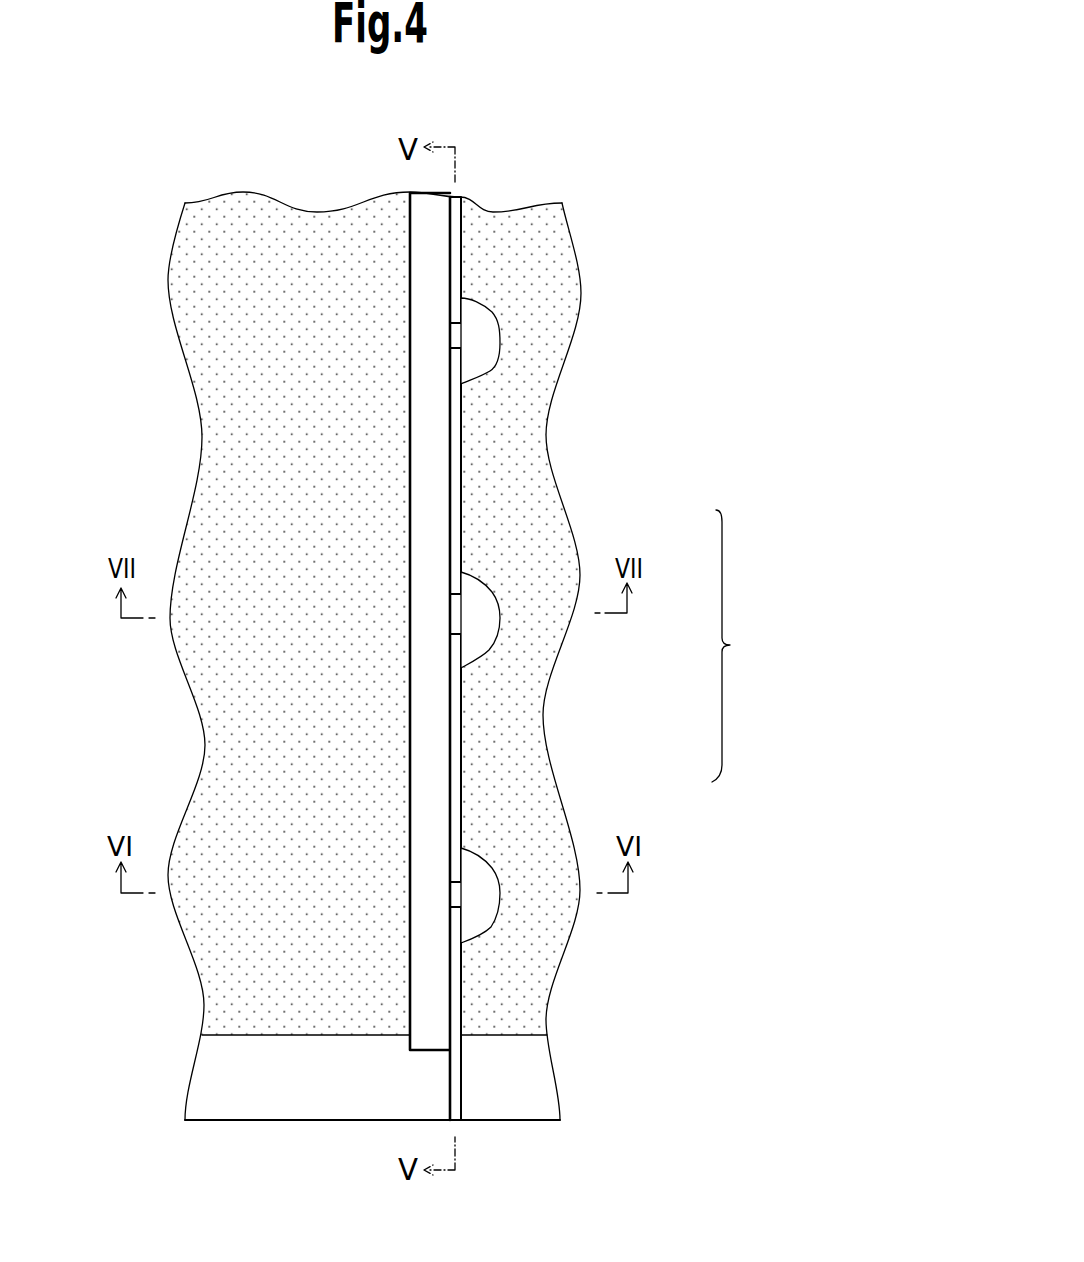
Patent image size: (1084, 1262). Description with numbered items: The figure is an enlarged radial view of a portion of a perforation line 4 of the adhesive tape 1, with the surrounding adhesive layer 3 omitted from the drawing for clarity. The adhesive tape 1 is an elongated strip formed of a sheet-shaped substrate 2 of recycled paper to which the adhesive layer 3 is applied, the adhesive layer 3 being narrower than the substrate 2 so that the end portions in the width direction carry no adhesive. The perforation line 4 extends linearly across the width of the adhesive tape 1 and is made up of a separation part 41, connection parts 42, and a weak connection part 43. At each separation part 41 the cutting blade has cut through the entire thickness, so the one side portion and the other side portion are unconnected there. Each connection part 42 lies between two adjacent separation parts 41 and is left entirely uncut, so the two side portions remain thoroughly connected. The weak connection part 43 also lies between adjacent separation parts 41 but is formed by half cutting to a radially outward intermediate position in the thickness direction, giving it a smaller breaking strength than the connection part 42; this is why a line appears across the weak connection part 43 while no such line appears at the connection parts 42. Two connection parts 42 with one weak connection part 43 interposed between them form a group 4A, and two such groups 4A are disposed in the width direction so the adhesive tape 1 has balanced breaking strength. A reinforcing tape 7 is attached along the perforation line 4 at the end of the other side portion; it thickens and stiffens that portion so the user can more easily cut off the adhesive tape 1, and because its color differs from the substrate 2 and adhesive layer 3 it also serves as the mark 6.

The adhesive tape 1 is at (231, 226).
The substrate 2 is at (225, 1082).
The adhesive layer 3 is at (220, 975).
The perforation line 4 is at (486, 185).
The group 4A is at (613, 620).
The separation part 41 is at (455, 262).
The connection part 42 is at (458, 333).
The weak connection part 43 is at (455, 613).
The mark 6 is at (380, 691).
The reinforcing tape 7 is at (423, 975).